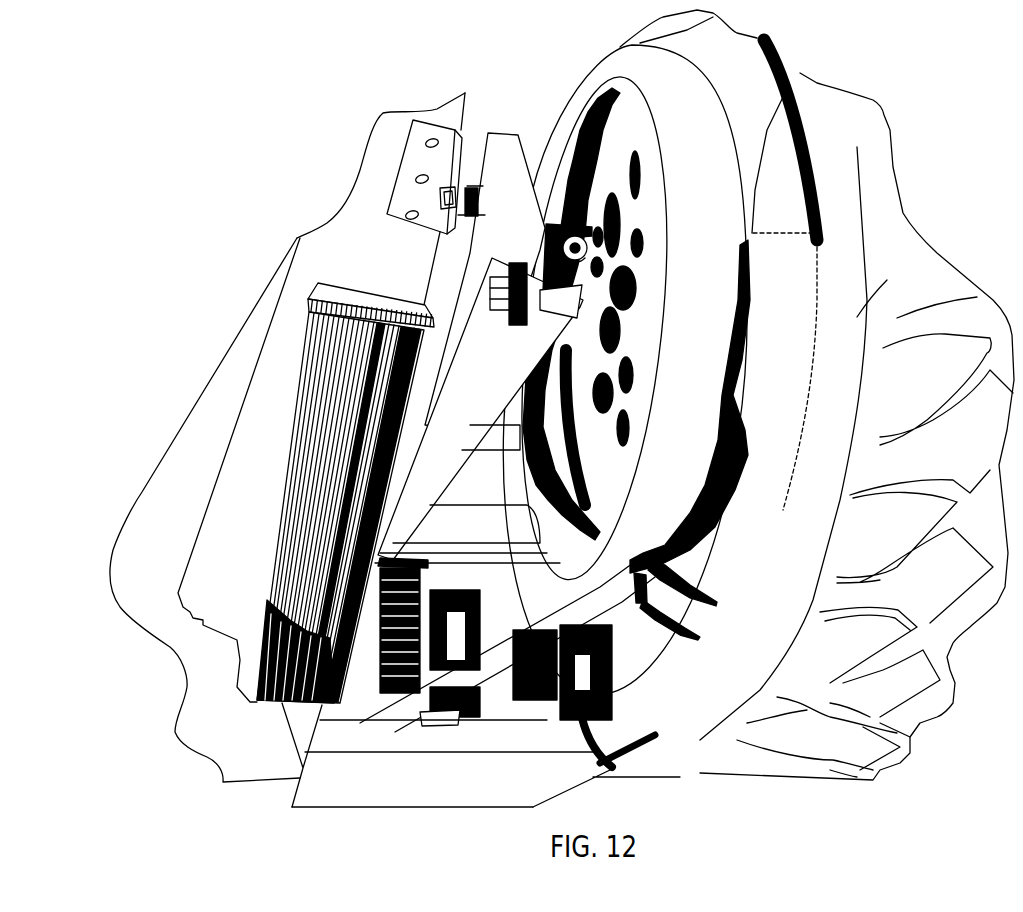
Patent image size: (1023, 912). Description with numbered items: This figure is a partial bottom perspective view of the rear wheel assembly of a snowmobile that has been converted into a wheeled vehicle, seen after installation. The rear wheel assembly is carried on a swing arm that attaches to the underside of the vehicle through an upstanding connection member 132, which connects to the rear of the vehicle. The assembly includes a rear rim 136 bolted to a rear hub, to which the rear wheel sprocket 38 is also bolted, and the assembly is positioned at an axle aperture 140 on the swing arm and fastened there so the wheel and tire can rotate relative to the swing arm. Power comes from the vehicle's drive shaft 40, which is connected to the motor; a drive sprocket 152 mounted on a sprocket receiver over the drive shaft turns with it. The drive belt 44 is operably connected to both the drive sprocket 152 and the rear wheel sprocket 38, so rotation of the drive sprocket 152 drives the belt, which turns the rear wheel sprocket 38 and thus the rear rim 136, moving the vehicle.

The rear wheel sprocket 38 is at (568, 100).
The drive shaft 40 is at (614, 778).
The drive belt 44 is at (674, 498).
The upstanding connection member 132 is at (468, 140).
The rear rim 136 is at (957, 300).
The axle aperture 140 is at (523, 272).
The drive sprocket 152 is at (272, 603).